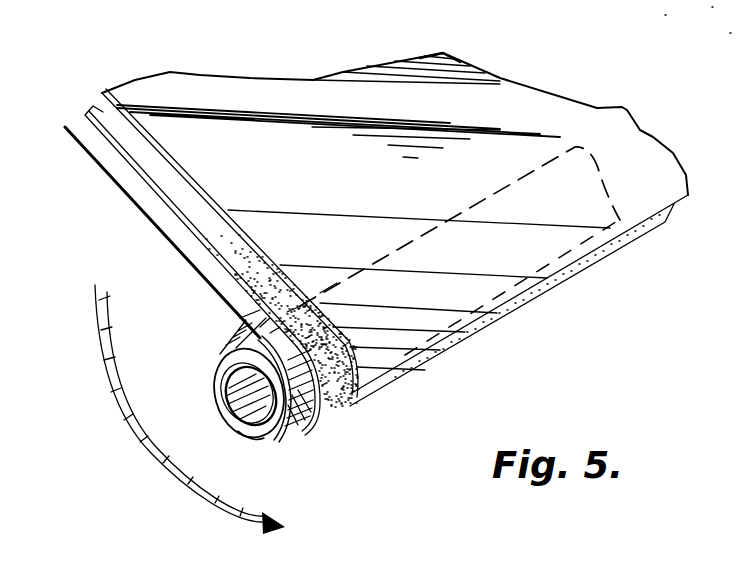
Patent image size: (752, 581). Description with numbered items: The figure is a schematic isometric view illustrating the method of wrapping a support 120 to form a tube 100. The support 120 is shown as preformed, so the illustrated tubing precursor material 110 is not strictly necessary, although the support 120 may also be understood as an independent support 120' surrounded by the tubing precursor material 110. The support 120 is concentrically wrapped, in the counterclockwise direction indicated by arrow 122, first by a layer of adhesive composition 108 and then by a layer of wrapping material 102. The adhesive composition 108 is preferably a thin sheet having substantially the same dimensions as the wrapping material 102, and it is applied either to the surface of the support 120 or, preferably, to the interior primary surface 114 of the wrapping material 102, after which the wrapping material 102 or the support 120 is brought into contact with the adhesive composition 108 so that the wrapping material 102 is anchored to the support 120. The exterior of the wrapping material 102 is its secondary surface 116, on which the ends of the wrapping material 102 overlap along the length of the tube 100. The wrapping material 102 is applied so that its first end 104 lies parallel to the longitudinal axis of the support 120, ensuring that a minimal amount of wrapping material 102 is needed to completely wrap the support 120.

The tube 100 is at (596, 284).
The wrapping material 102 is at (140, 78).
The first end 104 is at (447, 340).
The adhesive composition 108 is at (85, 115).
The tubing precursor material 110 is at (65, 126).
The primary surface 114 is at (240, 232).
The secondary surface 116 is at (500, 90).
The support 120 is at (231, 387).
The independent support 120' is at (233, 456).
The arrow 122 is at (222, 512).